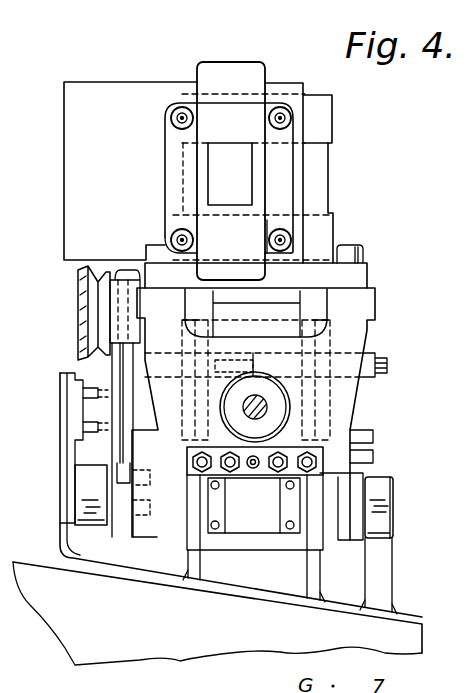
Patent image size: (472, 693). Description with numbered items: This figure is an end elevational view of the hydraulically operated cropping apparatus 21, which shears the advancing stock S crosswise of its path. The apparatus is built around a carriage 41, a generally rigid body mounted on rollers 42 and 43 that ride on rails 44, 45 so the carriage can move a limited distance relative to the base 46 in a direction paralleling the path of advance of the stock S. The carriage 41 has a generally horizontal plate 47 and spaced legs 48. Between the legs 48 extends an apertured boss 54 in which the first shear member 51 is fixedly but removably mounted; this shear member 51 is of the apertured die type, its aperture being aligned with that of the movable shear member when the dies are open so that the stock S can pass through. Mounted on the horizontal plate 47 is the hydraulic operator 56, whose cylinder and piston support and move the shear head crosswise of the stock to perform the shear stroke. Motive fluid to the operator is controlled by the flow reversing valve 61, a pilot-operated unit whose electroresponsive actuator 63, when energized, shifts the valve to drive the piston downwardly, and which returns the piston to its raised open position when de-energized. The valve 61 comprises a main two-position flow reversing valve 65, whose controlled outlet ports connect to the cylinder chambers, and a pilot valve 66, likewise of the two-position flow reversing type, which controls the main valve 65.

The hydraulically operated cropping apparatus 21 is at (343, 180).
The carriage 41 is at (380, 330).
The roller 42 is at (78, 312).
The roller 43 is at (388, 478).
The rail 44 is at (78, 365).
The rail 45 is at (384, 557).
The base 46 is at (98, 648).
The generally horizontal plate 47 is at (364, 272).
The legs 48 is at (353, 401).
The first shear member 51 is at (289, 418).
The apertured boss 54 is at (238, 346).
The hydraulic operator 56 is at (333, 119).
The flow reversing valve 61 is at (235, 63).
The electroresponsive actuator 63 is at (186, 230).
The main two-position flow reversing valve 65 is at (255, 117).
The pilot valve 66 is at (213, 166).
The stock S is at (243, 406).